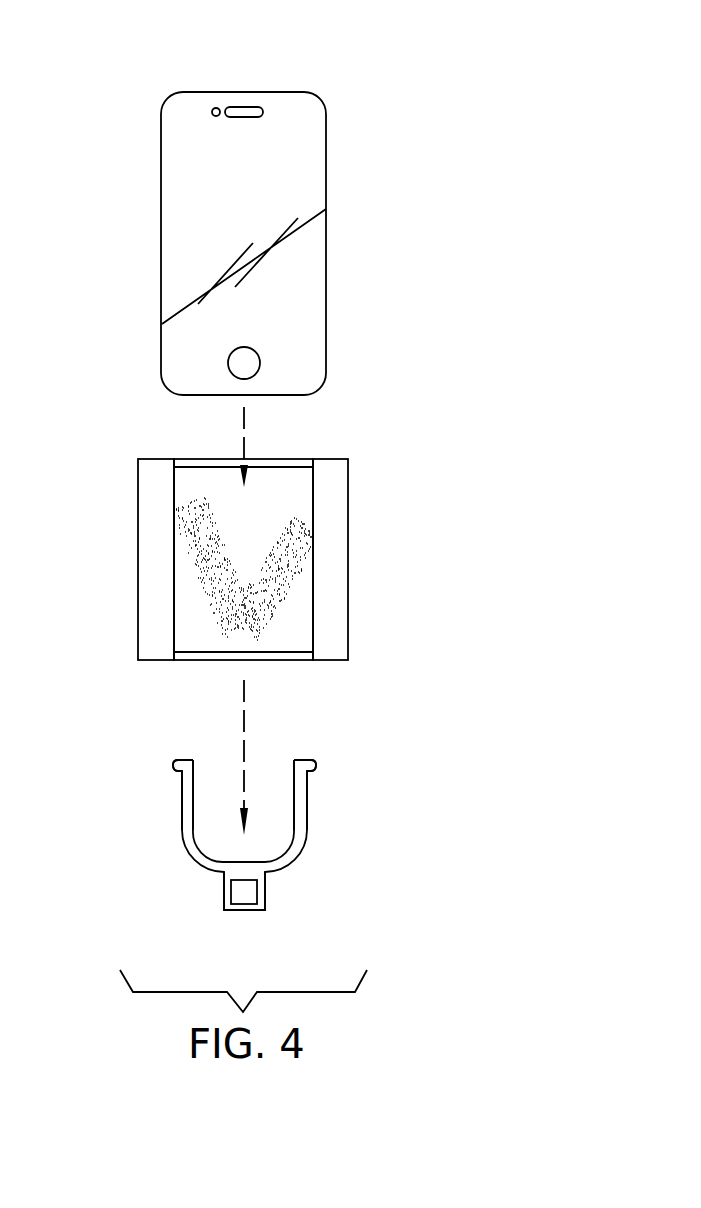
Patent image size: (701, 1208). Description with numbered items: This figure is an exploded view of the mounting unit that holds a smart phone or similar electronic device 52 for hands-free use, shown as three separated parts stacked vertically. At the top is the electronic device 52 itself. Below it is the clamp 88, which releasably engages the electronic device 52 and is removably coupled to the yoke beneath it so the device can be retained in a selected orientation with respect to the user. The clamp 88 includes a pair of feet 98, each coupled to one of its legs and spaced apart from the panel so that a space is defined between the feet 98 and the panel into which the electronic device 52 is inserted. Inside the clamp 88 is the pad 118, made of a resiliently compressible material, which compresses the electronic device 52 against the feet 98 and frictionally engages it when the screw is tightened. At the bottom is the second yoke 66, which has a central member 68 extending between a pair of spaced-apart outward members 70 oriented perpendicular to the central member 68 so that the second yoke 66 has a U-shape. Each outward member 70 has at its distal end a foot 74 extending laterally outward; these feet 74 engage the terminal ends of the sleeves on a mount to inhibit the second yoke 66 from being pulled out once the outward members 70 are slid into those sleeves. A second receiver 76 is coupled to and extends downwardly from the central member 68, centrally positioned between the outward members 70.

The electronic device 52 is at (238, 92).
The pad 118 is at (208, 497).
The clamp 88 is at (348, 543).
The feet 98 is at (150, 571).
The second yoke 66 is at (288, 862).
The foot 74 is at (175, 762).
The outward members 70 is at (182, 803).
The central member 68 is at (215, 875).
The second receiver 76 is at (253, 910).